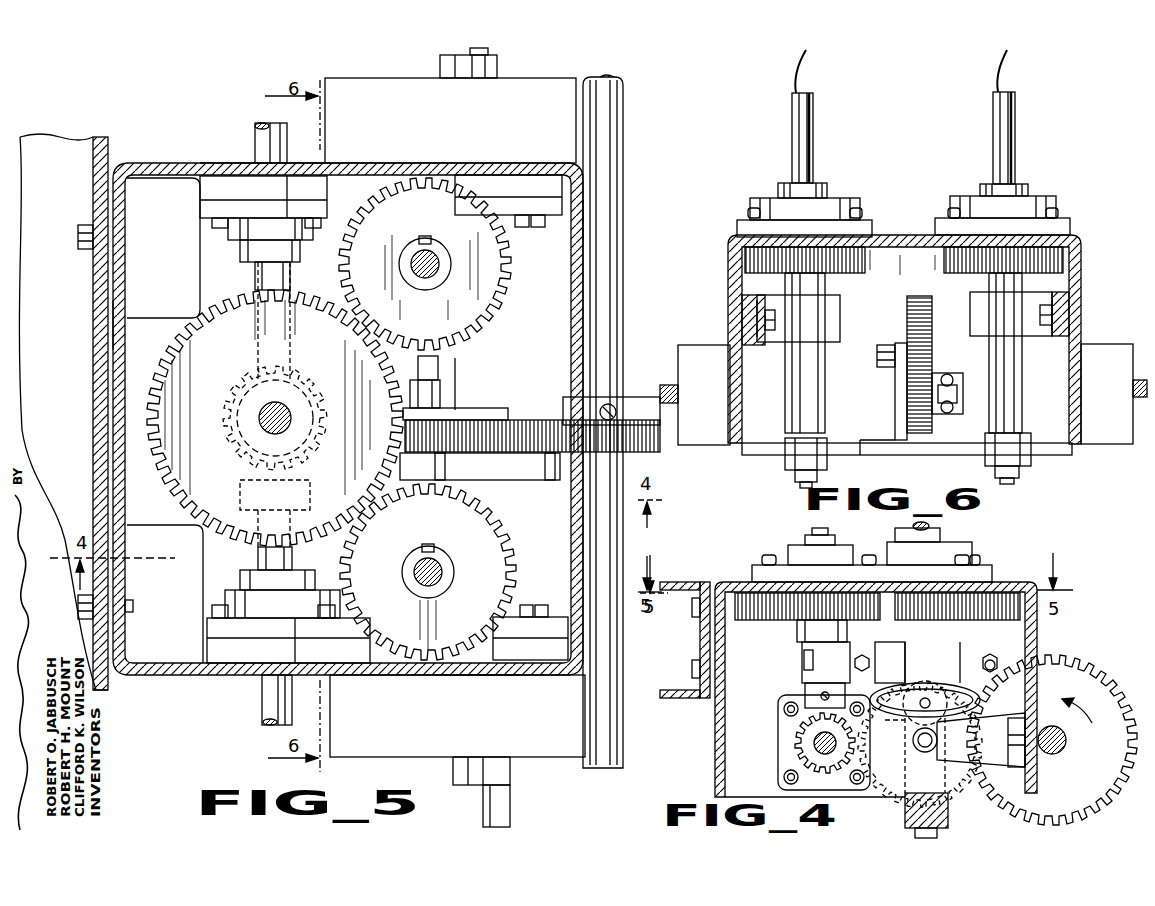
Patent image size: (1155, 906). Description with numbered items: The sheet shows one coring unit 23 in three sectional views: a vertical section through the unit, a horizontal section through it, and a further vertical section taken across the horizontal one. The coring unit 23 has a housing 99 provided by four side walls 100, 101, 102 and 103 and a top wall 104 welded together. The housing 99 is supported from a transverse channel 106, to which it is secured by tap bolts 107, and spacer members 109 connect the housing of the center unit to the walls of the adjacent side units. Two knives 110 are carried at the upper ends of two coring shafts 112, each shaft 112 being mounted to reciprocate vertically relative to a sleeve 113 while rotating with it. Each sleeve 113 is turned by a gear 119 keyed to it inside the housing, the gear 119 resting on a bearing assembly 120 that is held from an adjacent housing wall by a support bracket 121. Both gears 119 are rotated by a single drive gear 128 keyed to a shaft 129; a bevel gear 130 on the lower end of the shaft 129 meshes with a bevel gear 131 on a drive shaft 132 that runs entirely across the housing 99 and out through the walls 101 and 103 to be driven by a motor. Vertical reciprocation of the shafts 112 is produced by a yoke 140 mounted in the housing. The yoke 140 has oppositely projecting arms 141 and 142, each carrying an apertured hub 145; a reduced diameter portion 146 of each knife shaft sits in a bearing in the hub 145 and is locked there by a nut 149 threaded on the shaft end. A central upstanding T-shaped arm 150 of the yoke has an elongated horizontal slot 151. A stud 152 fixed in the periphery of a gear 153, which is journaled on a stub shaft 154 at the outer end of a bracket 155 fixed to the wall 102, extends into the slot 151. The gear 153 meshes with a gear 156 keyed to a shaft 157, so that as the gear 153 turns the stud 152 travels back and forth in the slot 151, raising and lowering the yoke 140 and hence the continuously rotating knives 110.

In FIG. 5, the coring unit 23 is at (152, 163).
In FIG. 6, the coring unit 23 is at (1084, 232).
In FIG. 4, the coring unit 23 is at (1004, 583).
In FIG. 5, the housing 99 is at (447, 165).
In FIG. 6, the housing 99 is at (1080, 258).
In FIG. 4, the housing 99 is at (1032, 636).
In FIG. 5, the side wall 100 is at (120, 323).
In FIG. 5, the side wall 101 is at (182, 163).
In FIG. 5, the side wall 102 is at (577, 222).
In FIG. 5, the side wall 103 is at (497, 665).
In FIG. 4, the top wall 104 is at (733, 582).
In FIG. 5, the transverse channel 106 is at (63, 412).
In FIG. 4, the transverse channel 106 is at (700, 697).
In FIG. 5, the tap bolts 107 is at (78, 237).
In FIG. 4, the tap bolts 107 is at (697, 618).
In FIG. 5, the spacer members 109 is at (497, 58).
In FIG. 6, the knives 110 is at (805, 75).
In FIG. 5, the coring shaft 112 is at (418, 275).
In FIG. 6, the coring shaft 112 is at (808, 104).
In FIG. 4, the coring shaft 112 is at (930, 526).
In FIG. 5, the sleeve 113 is at (432, 292).
In FIG. 6, the sleeve 113 is at (807, 357).
In FIG. 5, the gear 119 is at (508, 516).
In FIG. 6, the gear 119 is at (947, 267).
In FIG. 4, the gear 119 is at (970, 604).
In FIG. 6, the bearing assembly 120 is at (785, 335).
In FIG. 4, the bearing assembly 120 is at (868, 651).
In FIG. 5, the support bracket 121 is at (548, 203).
In FIG. 6, the support bracket 121 is at (760, 303).
In FIG. 5, the drive gear 128 is at (275, 418).
In FIG. 4, the drive gear 128 is at (783, 620).
In FIG. 5, the shaft 129 is at (262, 422).
In FIG. 4, the shaft 129 is at (822, 532).
In FIG. 5, the bevel gear 130 is at (245, 385).
In FIG. 4, the bevel gear 130 is at (778, 710).
In FIG. 5, the bevel gear 131 is at (248, 492).
In FIG. 4, the bevel gear 131 is at (805, 743).
In FIG. 5, the drive shaft 132 is at (255, 135).
In FIG. 4, the drive shaft 132 is at (818, 752).
In FIG. 5, the yoke 140 is at (443, 365).
In FIG. 6, the yoke 140 is at (925, 452).
In FIG. 4, the yoke 140 is at (905, 804).
In FIG. 5, the arm 141 is at (447, 384).
In FIG. 6, the arm 141 is at (858, 455).
In FIG. 6, the arm 142 is at (968, 455).
In FIG. 6, the apertured hub 145 is at (803, 452).
In FIG. 6, the reduced diameter portion 146 is at (813, 485).
In FIG. 6, the nut 149 is at (800, 483).
In FIG. 5, the T-shaped arm 150 is at (505, 416).
In FIG. 6, the T-shaped arm 150 is at (895, 362).
In FIG. 4, the T-shaped arm 150 is at (962, 690).
In FIG. 4, the slot 151 is at (925, 686).
In FIG. 5, the stud 152 is at (440, 402).
In FIG. 6, the stud 152 is at (887, 345).
In FIG. 4, the stud 152 is at (918, 710).
In FIG. 5, the gear 153 is at (455, 458).
In FIG. 4, the gear 153 is at (965, 758).
In FIG. 6, the stub shaft 154 is at (963, 385).
In FIG. 4, the stub shaft 154 is at (918, 743).
In FIG. 6, the bracket 155 is at (955, 398).
In FIG. 4, the bracket 155 is at (993, 728).
In FIG. 5, the gear 156 is at (540, 436).
In FIG. 6, the gear 156 is at (700, 447).
In FIG. 4, the gear 156 is at (1052, 740).
In FIG. 5, the shaft 157 is at (604, 183).
In FIG. 6, the shaft 157 is at (1135, 388).
In FIG. 4, the shaft 157 is at (1070, 758).